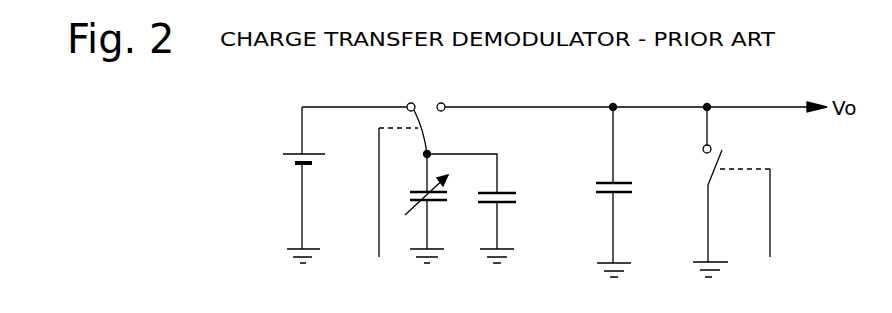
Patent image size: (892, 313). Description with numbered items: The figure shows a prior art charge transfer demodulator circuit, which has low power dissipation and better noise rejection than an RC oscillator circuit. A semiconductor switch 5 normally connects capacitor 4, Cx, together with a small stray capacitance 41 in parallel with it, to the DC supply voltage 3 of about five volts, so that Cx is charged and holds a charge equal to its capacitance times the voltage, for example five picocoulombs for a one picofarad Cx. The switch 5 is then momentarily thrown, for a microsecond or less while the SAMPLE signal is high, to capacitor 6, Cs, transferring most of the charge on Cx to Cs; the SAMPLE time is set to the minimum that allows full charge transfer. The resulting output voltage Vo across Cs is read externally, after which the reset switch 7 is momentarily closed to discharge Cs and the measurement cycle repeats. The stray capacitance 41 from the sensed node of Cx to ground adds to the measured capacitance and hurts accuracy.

The DC supply voltage 3 is at (293, 149).
The capacitor Cx 4 is at (422, 183).
The stray capacitance 41 is at (518, 180).
The semiconductor switch 5 is at (447, 93).
The capacitor Cs 6 is at (630, 170).
The reset switch 7 is at (700, 172).